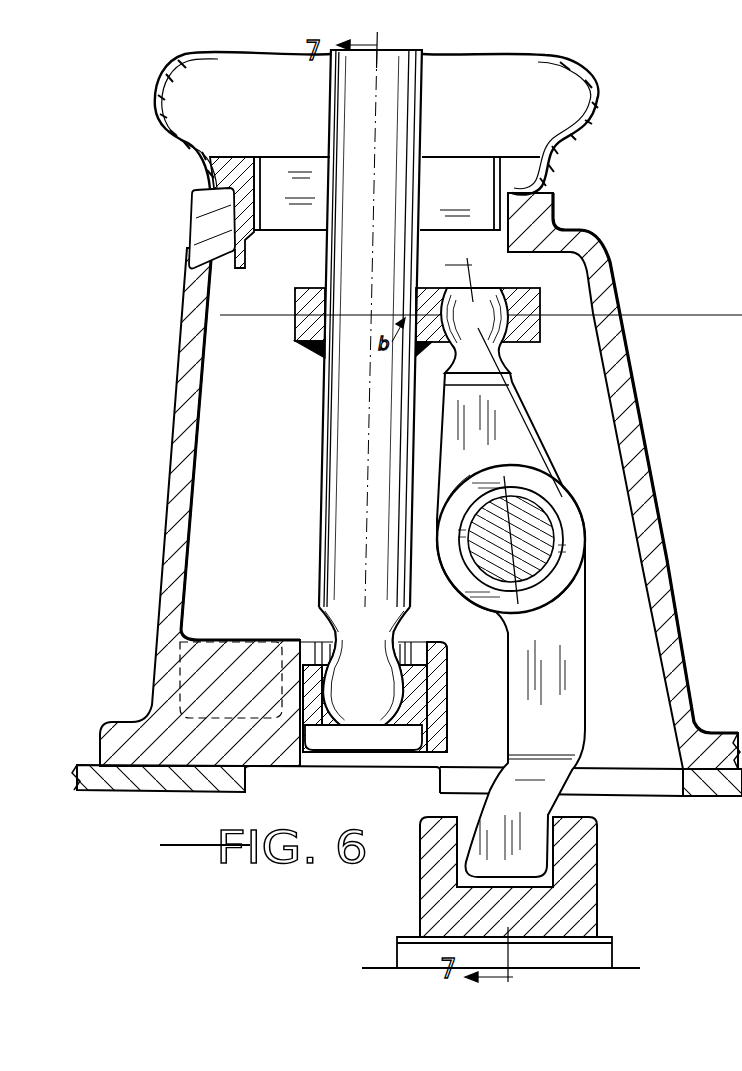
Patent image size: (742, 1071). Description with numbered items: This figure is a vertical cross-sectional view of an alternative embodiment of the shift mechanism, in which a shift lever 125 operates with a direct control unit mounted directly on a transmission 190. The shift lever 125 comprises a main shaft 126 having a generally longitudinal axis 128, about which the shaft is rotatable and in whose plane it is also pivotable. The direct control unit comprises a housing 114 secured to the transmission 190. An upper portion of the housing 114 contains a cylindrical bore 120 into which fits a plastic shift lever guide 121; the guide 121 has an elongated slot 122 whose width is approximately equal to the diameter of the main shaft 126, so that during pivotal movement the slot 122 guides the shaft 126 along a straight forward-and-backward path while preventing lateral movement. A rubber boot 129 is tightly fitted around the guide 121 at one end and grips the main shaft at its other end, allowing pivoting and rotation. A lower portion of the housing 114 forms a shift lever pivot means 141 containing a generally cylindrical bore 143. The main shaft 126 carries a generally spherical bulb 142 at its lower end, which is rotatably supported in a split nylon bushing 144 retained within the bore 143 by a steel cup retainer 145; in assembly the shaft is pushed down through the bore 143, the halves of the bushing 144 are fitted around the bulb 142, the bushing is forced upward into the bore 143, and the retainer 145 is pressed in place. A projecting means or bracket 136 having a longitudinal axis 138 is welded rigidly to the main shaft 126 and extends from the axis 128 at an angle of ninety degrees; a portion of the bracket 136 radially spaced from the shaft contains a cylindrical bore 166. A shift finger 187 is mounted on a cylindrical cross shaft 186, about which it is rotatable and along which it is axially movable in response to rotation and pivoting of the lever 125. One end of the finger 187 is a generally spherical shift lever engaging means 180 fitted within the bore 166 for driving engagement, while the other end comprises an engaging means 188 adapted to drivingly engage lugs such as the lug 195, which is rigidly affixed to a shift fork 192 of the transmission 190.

The housing 114 is at (172, 480).
The cylindrical bore 120 is at (234, 226).
The shift lever guide 121 is at (237, 170).
The elongated slot 122 is at (470, 201).
The shift lever 125 is at (420, 123).
The main shaft 126 is at (348, 118).
The longitudinal axis 128 is at (380, 121).
The rubber boot 129 is at (599, 108).
The projecting means 136 is at (296, 316).
The longitudinal axis 138 is at (676, 315).
The shift lever pivot means 141 is at (297, 660).
The spherical bulb 142 is at (392, 670).
The cylindrical bore 143 is at (332, 750).
The split nylon bushing 144 is at (383, 696).
The cup retainer 145 is at (388, 768).
The cylindrical bore 166 is at (487, 300).
The shift lever engaging means 180 is at (498, 376).
The cross shaft 186 is at (548, 532).
The shift finger 187 is at (518, 443).
The engaging means 188 is at (541, 846).
The transmission 190 is at (93, 764).
The shift fork 192 is at (580, 905).
The lug 195 is at (535, 857).